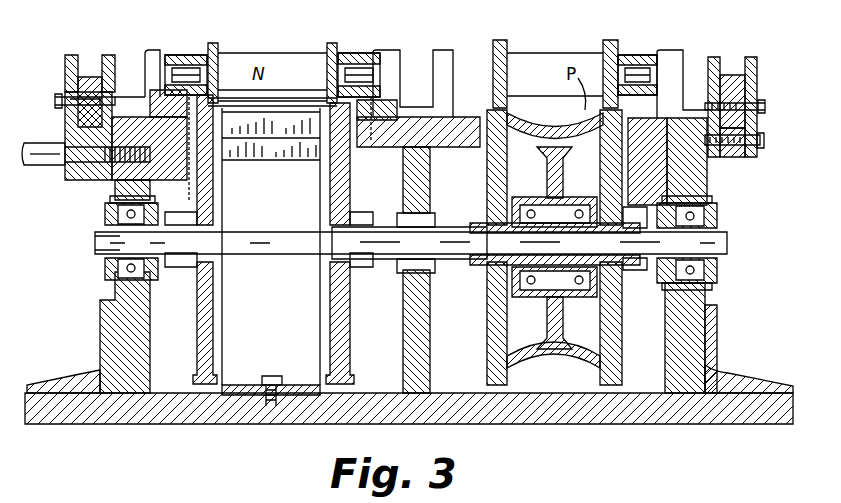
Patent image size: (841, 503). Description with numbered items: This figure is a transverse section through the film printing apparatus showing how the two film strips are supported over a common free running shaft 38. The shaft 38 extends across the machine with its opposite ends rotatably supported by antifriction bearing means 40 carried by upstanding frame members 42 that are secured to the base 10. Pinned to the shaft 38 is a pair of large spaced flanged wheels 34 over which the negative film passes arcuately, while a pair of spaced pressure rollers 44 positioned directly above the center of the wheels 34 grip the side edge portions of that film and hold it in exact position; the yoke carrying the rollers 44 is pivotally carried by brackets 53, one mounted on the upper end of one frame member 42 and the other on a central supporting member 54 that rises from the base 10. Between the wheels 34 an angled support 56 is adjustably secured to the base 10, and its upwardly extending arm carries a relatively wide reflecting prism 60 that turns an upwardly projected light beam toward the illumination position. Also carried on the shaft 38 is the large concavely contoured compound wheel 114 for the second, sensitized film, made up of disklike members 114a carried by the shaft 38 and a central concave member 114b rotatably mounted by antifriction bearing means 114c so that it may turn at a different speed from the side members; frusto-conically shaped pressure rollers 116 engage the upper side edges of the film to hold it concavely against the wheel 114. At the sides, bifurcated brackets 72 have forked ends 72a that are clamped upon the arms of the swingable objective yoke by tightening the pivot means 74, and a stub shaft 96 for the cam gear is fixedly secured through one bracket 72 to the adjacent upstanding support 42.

The base 10 is at (740, 402).
The flanged wheels 34 is at (197, 346).
The free running shaft 38 is at (262, 243).
The antifriction bearing means 40 is at (718, 228).
The upstanding frame members 42 is at (128, 290).
The pressure rollers 44 is at (220, 50).
The brackets 53 is at (152, 58).
The central supporting member 54 is at (410, 178).
The angled support 56 is at (271, 343).
The reflecting prism 60 is at (273, 155).
The bifurcated brackets 72 is at (87, 178).
The forked ends 72a is at (725, 57).
The pivot means 74 is at (765, 104).
The stub shaft 96 is at (55, 170).
The concavely contoured compound wheel 114 is at (480, 366).
The disklike members 114a is at (615, 343).
The central concave member 114b is at (548, 368).
The antifriction bearing means 114c is at (493, 290).
The frusto-conically shaped pressure rollers 116 is at (503, 45).